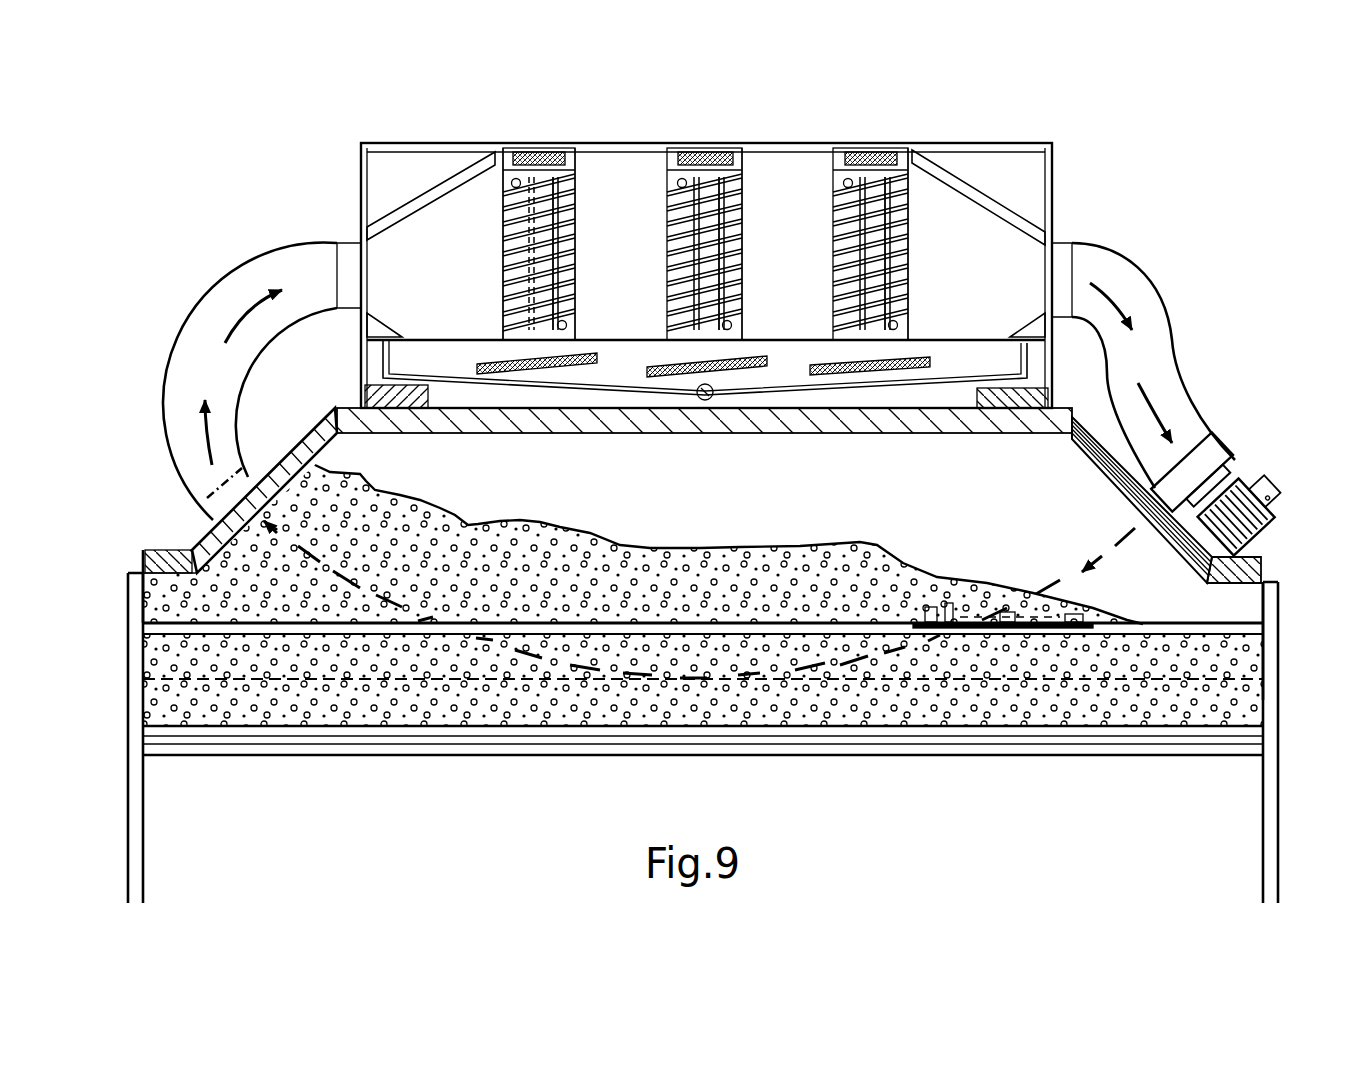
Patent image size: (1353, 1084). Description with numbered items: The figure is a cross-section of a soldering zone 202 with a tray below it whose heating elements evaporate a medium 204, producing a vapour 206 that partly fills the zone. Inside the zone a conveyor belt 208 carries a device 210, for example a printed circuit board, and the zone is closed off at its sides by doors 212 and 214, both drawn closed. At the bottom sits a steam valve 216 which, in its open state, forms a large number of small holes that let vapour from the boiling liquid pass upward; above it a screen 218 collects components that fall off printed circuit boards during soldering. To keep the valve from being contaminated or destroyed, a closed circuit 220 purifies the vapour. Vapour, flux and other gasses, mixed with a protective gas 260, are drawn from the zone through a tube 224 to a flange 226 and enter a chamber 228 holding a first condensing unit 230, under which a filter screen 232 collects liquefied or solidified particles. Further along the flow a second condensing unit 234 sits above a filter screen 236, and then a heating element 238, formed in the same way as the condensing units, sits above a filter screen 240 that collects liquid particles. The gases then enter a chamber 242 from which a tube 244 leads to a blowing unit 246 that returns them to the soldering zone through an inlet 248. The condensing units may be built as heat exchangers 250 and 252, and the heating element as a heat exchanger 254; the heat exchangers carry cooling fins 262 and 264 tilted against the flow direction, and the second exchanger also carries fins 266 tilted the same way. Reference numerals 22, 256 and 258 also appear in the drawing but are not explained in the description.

The soldering zone 202 is at (1222, 142).
The medium 204 is at (1079, 845).
The vapour 206 is at (162, 572).
The conveyor belt 208 is at (167, 622).
The device 210 is at (960, 622).
The door 212 is at (1268, 588).
The door 214 is at (128, 573).
The steam valve 216 is at (552, 745).
The screen 218 is at (330, 680).
The sloped lid wall 22 is at (250, 473).
The closed circuit 220 is at (702, 120).
The tube 224 is at (232, 303).
The flange 226 is at (347, 248).
The chamber 228 is at (462, 205).
The first condensing unit 230 is at (590, 183).
The filter screen 232 is at (558, 368).
The second condensing unit 234 is at (762, 193).
The filter screen 236 is at (752, 372).
The heating element 238 is at (930, 200).
The filter screen 240 is at (880, 370).
The chamber 242 is at (1007, 240).
The tube 244 is at (1160, 290).
The blowing unit 246 is at (1230, 450).
The inlet 248 is at (1180, 552).
The heat exchanger 250 is at (566, 210).
The heat exchanger 252 is at (740, 248).
The heat exchanger 254 is at (912, 237).
The chamber floor 256 is at (973, 357).
The drain 258 is at (706, 402).
The protective gas 260 is at (419, 294).
The cooling fins 262 is at (562, 178).
The cooling fins 264 is at (730, 210).
The fins 266 is at (895, 222).